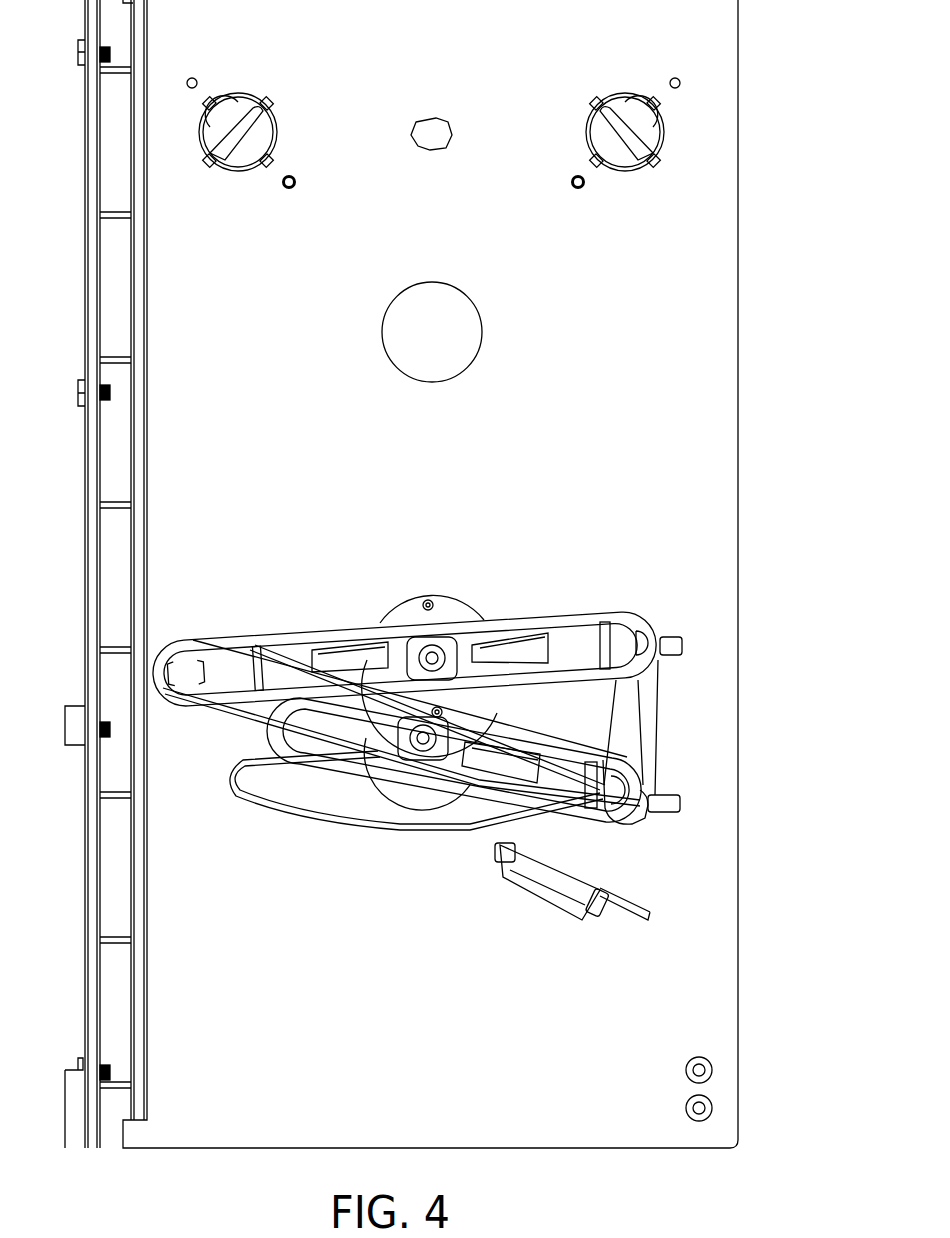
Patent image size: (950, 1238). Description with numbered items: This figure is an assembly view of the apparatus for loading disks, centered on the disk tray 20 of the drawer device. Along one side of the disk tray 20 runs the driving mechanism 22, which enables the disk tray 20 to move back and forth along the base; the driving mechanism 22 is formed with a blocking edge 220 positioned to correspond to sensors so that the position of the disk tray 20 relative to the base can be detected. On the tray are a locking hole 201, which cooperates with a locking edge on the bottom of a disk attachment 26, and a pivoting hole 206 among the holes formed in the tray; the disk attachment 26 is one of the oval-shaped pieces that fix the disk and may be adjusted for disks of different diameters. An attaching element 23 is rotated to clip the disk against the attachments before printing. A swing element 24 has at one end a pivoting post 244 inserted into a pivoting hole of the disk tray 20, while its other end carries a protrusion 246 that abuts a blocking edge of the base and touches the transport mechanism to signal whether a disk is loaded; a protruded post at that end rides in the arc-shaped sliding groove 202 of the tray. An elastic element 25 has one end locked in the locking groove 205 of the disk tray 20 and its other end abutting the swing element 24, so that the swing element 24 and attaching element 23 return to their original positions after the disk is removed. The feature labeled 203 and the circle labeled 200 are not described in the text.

The disk tray 20 is at (718, 358).
The driving mechanism 22 is at (92, 272).
The blocking edge 220 is at (143, 270).
The opening 200 is at (450, 345).
The locking hole 201 is at (622, 97).
The disk attachment 26 is at (598, 130).
The pivoting hole 206 is at (432, 140).
The attaching element 23 is at (448, 600).
The swing element 24 is at (583, 678).
The pivoting post 244 is at (167, 690).
The protrusion 246 is at (672, 650).
The elastic element 25 is at (447, 815).
The arc-shaped sliding groove 202 is at (640, 807).
The wire 203 is at (450, 800).
The locking groove 205 is at (600, 905).